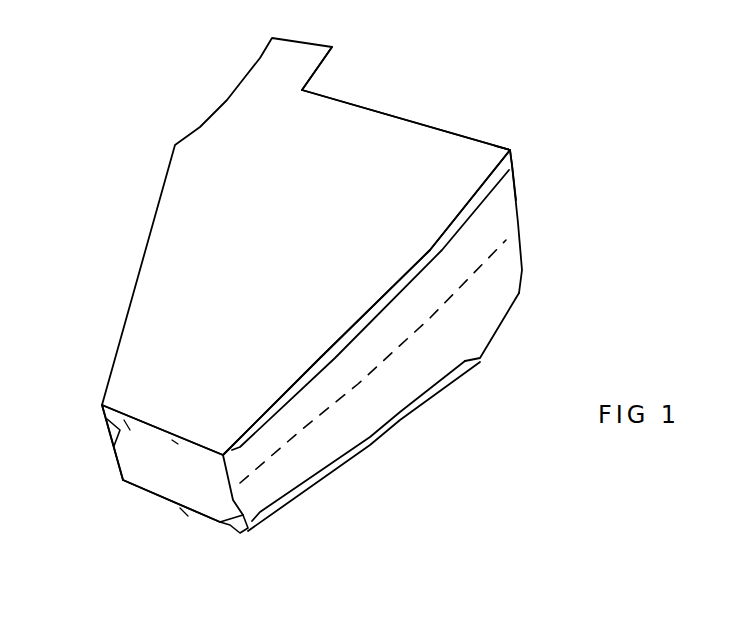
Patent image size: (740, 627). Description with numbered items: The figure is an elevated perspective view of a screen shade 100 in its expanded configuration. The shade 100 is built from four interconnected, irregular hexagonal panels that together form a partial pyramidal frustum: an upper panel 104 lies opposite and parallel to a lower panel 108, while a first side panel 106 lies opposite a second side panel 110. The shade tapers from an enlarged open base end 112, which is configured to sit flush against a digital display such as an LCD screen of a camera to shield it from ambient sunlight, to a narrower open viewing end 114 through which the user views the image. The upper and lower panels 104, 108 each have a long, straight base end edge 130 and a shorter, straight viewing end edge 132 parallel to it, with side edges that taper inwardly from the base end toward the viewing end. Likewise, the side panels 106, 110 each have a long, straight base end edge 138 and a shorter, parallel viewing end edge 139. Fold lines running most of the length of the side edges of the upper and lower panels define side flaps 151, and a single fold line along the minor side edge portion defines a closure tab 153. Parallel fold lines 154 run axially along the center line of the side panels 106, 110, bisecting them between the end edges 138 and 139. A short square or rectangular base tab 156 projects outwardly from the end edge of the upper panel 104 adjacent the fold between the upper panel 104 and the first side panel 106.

The screen shade 100 is at (150, 137).
The upper panel 104 is at (325, 231).
The first side panel 106 is at (108, 425).
The lower panel 108 is at (225, 522).
The second side panel 110 is at (495, 220).
The open base end 112 is at (479, 127).
The open viewing end 114 is at (149, 514).
The base end edge 130 is at (408, 118).
The viewing end edge 132 is at (174, 436).
The base end edge 138 is at (522, 237).
The viewing end edge 139 is at (122, 455).
The side flap 151 is at (397, 275).
The closure tab 153 is at (515, 167).
The fold line 154 is at (468, 280).
The base tab 156 is at (305, 71).